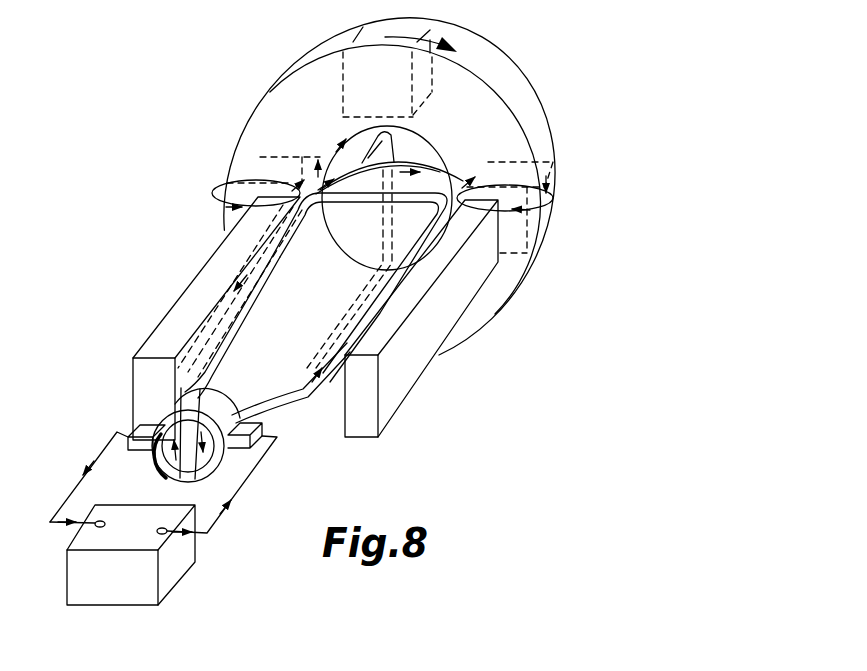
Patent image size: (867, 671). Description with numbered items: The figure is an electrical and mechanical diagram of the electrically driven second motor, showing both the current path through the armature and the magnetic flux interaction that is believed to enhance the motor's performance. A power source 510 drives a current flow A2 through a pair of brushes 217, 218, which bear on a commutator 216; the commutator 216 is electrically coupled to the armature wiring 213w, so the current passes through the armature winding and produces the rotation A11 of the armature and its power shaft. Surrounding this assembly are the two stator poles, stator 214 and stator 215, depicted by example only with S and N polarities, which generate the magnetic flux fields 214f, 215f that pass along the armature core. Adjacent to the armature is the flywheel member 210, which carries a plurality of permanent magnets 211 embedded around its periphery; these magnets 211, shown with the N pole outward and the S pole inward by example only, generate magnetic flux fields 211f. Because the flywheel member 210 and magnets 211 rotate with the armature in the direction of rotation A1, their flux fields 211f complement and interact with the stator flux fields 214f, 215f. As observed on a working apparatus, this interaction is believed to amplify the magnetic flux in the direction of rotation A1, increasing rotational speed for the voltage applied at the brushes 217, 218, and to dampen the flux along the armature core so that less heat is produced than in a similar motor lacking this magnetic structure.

The flywheel member 210 is at (512, 80).
The permanent magnets 211 is at (242, 178).
The magnetic flux fields 211f is at (213, 185).
The armature wiring 213w is at (270, 257).
The stator 214 is at (417, 379).
The magnetic flux field 214f is at (280, 204).
The stator 215 is at (182, 293).
The magnetic flux field 215f is at (456, 237).
The commutator 216 is at (213, 400).
The brush 217 is at (140, 430).
The brush 218 is at (252, 453).
The power source 510 is at (138, 589).
The direction of rotation A1 is at (420, 35).
The current flow A2 is at (232, 286).
The rotation A11 is at (417, 132).